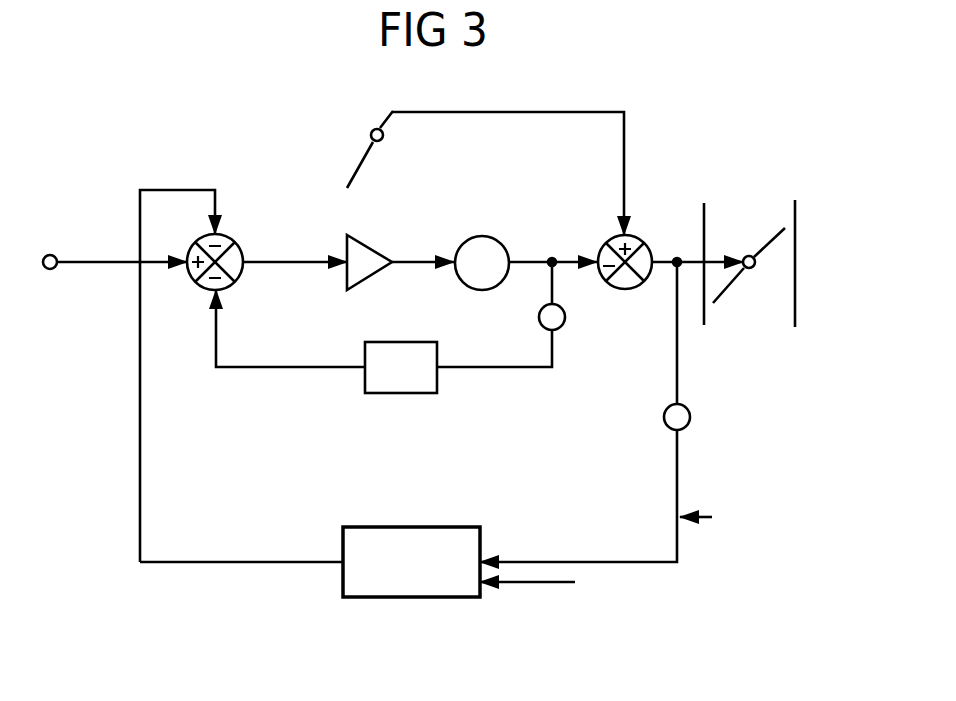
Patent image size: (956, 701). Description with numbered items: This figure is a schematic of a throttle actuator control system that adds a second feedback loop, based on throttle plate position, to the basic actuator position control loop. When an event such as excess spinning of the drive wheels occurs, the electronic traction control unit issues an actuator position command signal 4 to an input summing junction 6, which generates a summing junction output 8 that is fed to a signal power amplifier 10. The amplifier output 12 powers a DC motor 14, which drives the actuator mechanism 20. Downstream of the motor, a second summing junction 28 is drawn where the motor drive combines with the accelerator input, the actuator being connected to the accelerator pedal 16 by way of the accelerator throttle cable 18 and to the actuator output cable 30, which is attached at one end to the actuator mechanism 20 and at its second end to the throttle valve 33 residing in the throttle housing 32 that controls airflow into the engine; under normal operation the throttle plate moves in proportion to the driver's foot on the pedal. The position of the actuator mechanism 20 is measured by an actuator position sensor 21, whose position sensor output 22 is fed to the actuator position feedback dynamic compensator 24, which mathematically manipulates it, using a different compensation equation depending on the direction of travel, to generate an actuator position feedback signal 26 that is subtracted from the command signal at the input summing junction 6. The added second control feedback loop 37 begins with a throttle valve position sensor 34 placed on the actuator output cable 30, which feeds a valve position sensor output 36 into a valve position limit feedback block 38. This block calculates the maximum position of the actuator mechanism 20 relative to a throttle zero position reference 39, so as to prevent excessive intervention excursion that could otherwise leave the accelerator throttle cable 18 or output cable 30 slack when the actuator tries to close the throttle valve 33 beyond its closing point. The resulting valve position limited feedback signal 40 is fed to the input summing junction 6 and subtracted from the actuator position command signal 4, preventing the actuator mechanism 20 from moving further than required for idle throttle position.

The actuator position command signal 4 is at (100, 259).
The input summing junction 6 is at (235, 243).
The summing junction output 8 is at (288, 262).
The signal power amplifier 10 is at (366, 241).
The amplifier output 12 is at (410, 265).
The DC motor 14 is at (492, 237).
The accelerator pedal 16 is at (368, 157).
The accelerator throttle cable 18 is at (523, 112).
The actuator mechanism 20 is at (546, 262).
The actuator position sensor 21 is at (540, 316).
The position sensor output 22 is at (478, 367).
The actuator position feedback dynamic compensator 24 is at (413, 393).
The actuator position feedback signal 26 is at (216, 326).
The second summing junction 28 is at (650, 244).
The actuator output cable 30 is at (681, 268).
The throttle housing 32 is at (797, 236).
The throttle valve 33 is at (729, 288).
The throttle valve position sensor 34 is at (690, 414).
The valve position sensor output 36 is at (605, 566).
The second control feedback loop 37 is at (710, 517).
The valve position limit feedback block 38 is at (405, 597).
The throttle zero position reference 39 is at (548, 584).
The valve position limited feedback signal 40 is at (170, 190).